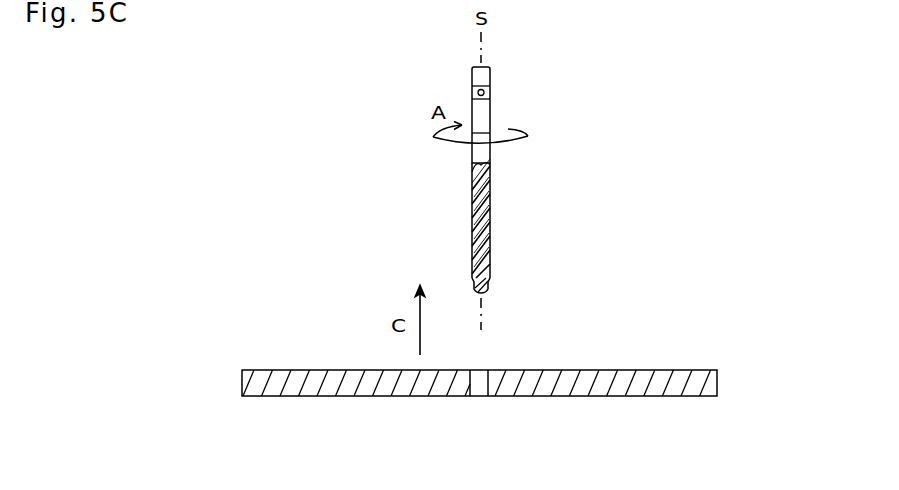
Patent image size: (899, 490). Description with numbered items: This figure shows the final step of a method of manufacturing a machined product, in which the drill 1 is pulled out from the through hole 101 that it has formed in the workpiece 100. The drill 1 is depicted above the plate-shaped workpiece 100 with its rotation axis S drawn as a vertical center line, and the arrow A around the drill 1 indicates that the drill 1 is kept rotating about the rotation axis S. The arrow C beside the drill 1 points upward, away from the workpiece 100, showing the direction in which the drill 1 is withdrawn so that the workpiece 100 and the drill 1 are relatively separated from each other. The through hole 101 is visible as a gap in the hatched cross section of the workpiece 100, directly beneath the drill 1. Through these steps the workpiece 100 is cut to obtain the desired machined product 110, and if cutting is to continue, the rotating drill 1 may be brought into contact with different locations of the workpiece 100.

The drill 1 is at (500, 87).
The workpiece 100 is at (550, 356).
The machined product 110 is at (719, 372).
The through hole 101 is at (481, 386).